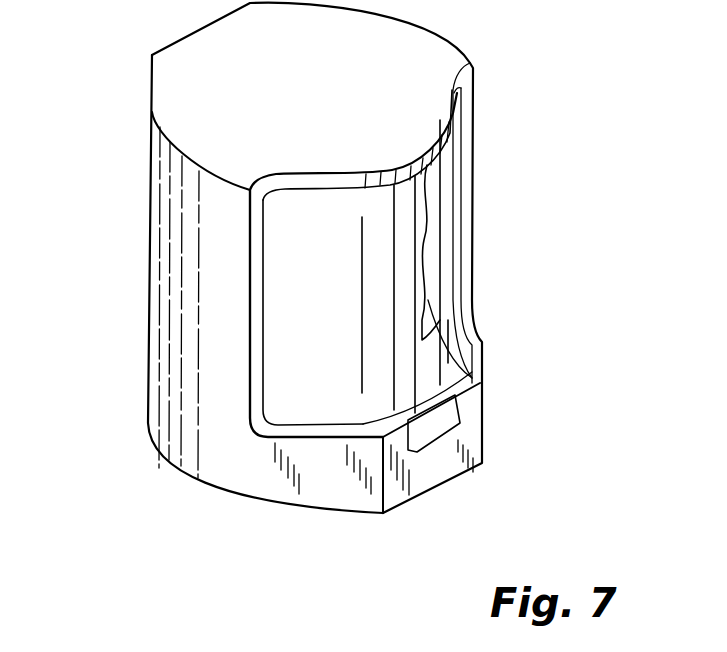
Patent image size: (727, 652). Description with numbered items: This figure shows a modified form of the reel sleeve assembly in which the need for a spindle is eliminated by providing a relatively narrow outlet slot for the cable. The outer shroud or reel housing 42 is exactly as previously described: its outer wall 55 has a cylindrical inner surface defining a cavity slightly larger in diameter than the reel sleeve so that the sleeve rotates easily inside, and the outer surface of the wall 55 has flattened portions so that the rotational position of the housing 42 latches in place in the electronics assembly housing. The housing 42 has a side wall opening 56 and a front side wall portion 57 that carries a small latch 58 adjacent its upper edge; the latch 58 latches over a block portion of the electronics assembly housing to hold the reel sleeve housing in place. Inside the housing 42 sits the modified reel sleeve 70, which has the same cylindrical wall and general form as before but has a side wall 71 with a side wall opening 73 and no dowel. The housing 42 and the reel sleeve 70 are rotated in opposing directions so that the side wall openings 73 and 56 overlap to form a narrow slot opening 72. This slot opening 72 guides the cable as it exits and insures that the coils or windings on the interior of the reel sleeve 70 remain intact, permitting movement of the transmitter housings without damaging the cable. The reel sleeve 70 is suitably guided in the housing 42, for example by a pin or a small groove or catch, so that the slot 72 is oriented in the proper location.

The shroud or reel housing 42 is at (404, 46).
The outer wall 55 is at (163, 422).
The side wall opening 56 is at (472, 282).
The front side wall portion 57 is at (438, 462).
The latch 58 is at (440, 421).
The reel sleeve 70 is at (402, 192).
The side wall 71 is at (372, 388).
The slot opening 72 is at (440, 243).
The side wall opening 73 is at (430, 208).